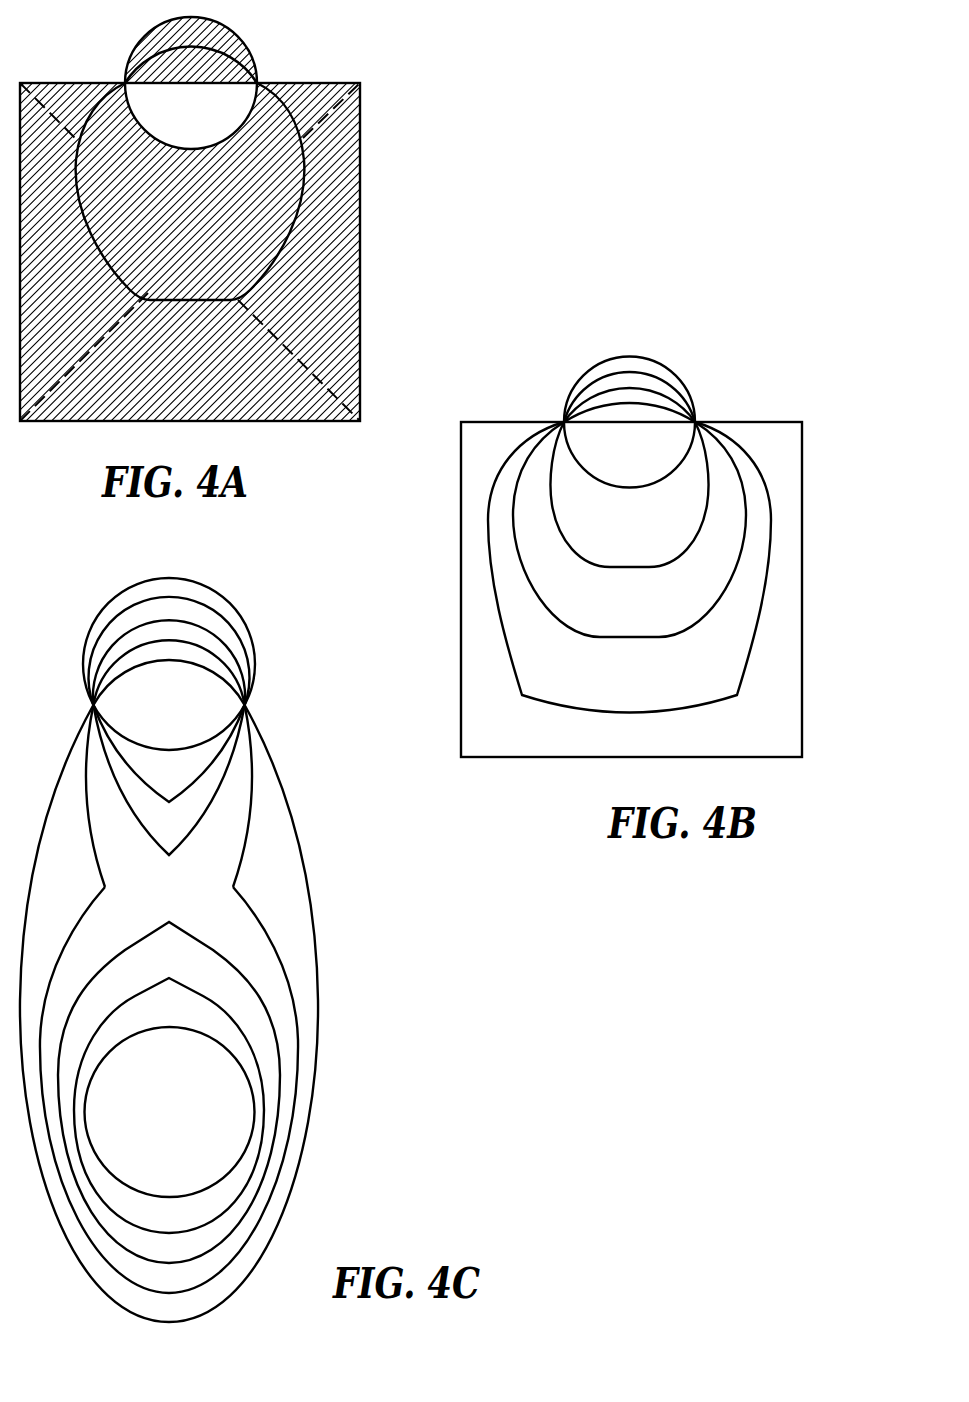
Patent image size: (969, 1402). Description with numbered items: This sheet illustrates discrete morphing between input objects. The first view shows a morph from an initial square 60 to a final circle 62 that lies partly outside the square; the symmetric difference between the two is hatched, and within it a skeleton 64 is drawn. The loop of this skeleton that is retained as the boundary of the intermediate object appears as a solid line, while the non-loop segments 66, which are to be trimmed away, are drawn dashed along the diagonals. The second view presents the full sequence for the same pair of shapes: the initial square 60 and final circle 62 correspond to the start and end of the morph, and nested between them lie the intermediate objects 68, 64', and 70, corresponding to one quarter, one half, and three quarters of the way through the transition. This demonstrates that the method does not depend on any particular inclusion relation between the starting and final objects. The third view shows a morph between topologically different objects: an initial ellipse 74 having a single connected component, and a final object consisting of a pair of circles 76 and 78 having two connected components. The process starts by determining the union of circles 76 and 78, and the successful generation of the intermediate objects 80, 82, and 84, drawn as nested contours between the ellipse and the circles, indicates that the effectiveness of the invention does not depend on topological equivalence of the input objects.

In FIG. 4A, the initial square 60 is at (362, 188).
In FIG. 4B, the initial square 60 is at (461, 606).
In FIG. 4A, the final circle 62 is at (252, 50).
In FIG. 4B, the final circle 62 is at (688, 383).
In FIG. 4A, the skeleton 64 is at (253, 162).
In FIG. 4B, the intermediate object 64' is at (556, 529).
In FIG. 4A, the non-loop segments 66 is at (40, 88).
In FIG. 4B, the intermediate object 68 is at (492, 570).
In FIG. 4B, the intermediate object 70 is at (550, 487).
In FIG. 4C, the initial ellipse 74 is at (345, 946).
In FIG. 4C, the circle 76 is at (255, 1106).
In FIG. 4C, the circle 78 is at (253, 640).
In FIG. 4C, the intermediate object 80 is at (223, 618).
In FIG. 4C, the intermediate object 82 is at (107, 660).
In FIG. 4C, the intermediate object 84 is at (232, 668).